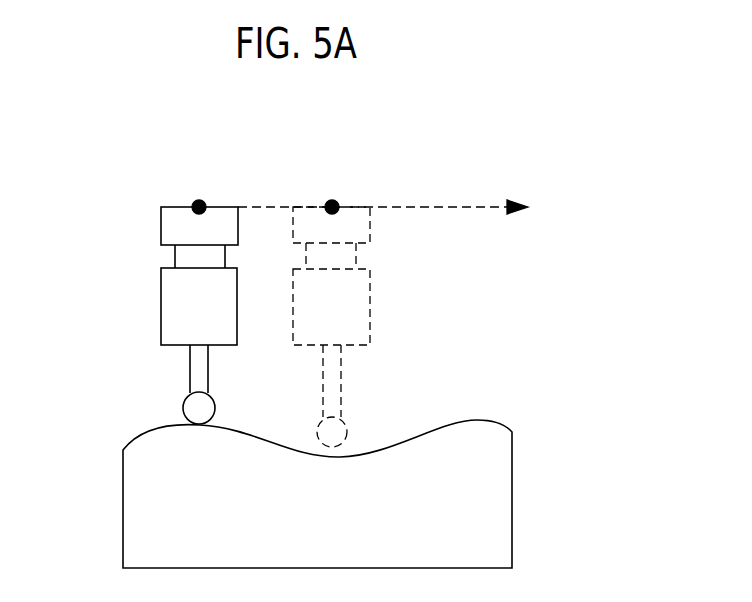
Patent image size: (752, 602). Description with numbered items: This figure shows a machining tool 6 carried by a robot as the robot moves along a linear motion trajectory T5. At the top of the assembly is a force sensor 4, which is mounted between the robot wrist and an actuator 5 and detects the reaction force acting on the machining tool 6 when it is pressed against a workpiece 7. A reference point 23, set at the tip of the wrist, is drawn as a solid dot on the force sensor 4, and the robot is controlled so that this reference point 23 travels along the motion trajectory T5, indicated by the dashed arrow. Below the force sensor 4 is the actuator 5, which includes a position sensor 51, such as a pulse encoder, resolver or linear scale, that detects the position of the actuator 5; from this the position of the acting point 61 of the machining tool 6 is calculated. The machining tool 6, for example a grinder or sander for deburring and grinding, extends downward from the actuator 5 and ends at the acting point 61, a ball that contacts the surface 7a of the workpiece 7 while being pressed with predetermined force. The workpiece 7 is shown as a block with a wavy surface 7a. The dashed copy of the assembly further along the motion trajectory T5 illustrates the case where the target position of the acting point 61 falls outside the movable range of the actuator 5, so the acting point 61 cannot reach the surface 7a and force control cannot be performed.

The reference point 23 is at (199, 203).
The force sensor 4 is at (161, 225).
The position sensor 51 is at (175, 257).
The actuator 5 is at (161, 305).
The machining tool 6 is at (188, 377).
The acting point 61 is at (184, 408).
The motion trajectory T5 is at (451, 207).
The surface 7a is at (455, 423).
The workpiece 7 is at (512, 507).